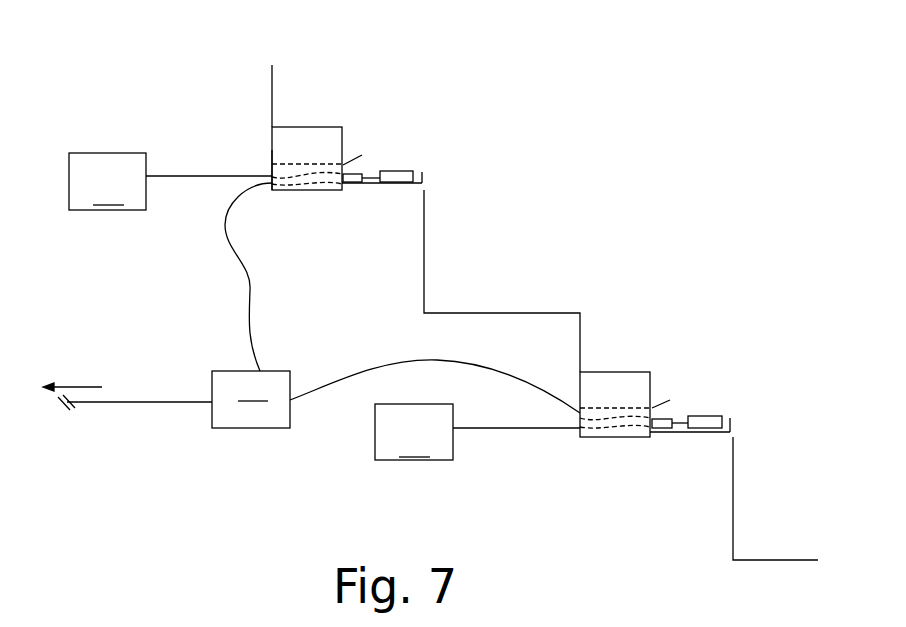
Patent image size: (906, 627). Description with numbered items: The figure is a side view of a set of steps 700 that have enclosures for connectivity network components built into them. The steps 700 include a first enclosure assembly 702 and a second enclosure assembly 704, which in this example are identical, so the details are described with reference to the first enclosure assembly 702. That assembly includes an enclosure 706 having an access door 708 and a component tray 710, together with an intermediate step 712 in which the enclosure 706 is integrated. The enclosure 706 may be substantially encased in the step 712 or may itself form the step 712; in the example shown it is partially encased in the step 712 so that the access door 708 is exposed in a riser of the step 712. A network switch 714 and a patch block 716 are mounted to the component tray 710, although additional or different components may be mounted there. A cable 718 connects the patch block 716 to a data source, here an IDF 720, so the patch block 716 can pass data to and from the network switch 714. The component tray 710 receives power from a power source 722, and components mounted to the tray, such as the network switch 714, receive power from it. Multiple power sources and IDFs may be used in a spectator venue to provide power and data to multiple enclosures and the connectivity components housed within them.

The set of steps 700 is at (613, 156).
The first enclosure assembly 702 is at (436, 72).
The second enclosure assembly 704 is at (670, 343).
The enclosure 706 is at (270, 171).
The access door 708 is at (360, 155).
The component tray 710 is at (422, 172).
The intermediate step 712 is at (292, 125).
The network switch 714 is at (407, 168).
The patch block 716 is at (355, 183).
The cable 718 is at (247, 303).
The IDF 720 is at (251, 399).
The power source 722 is at (324, 306).